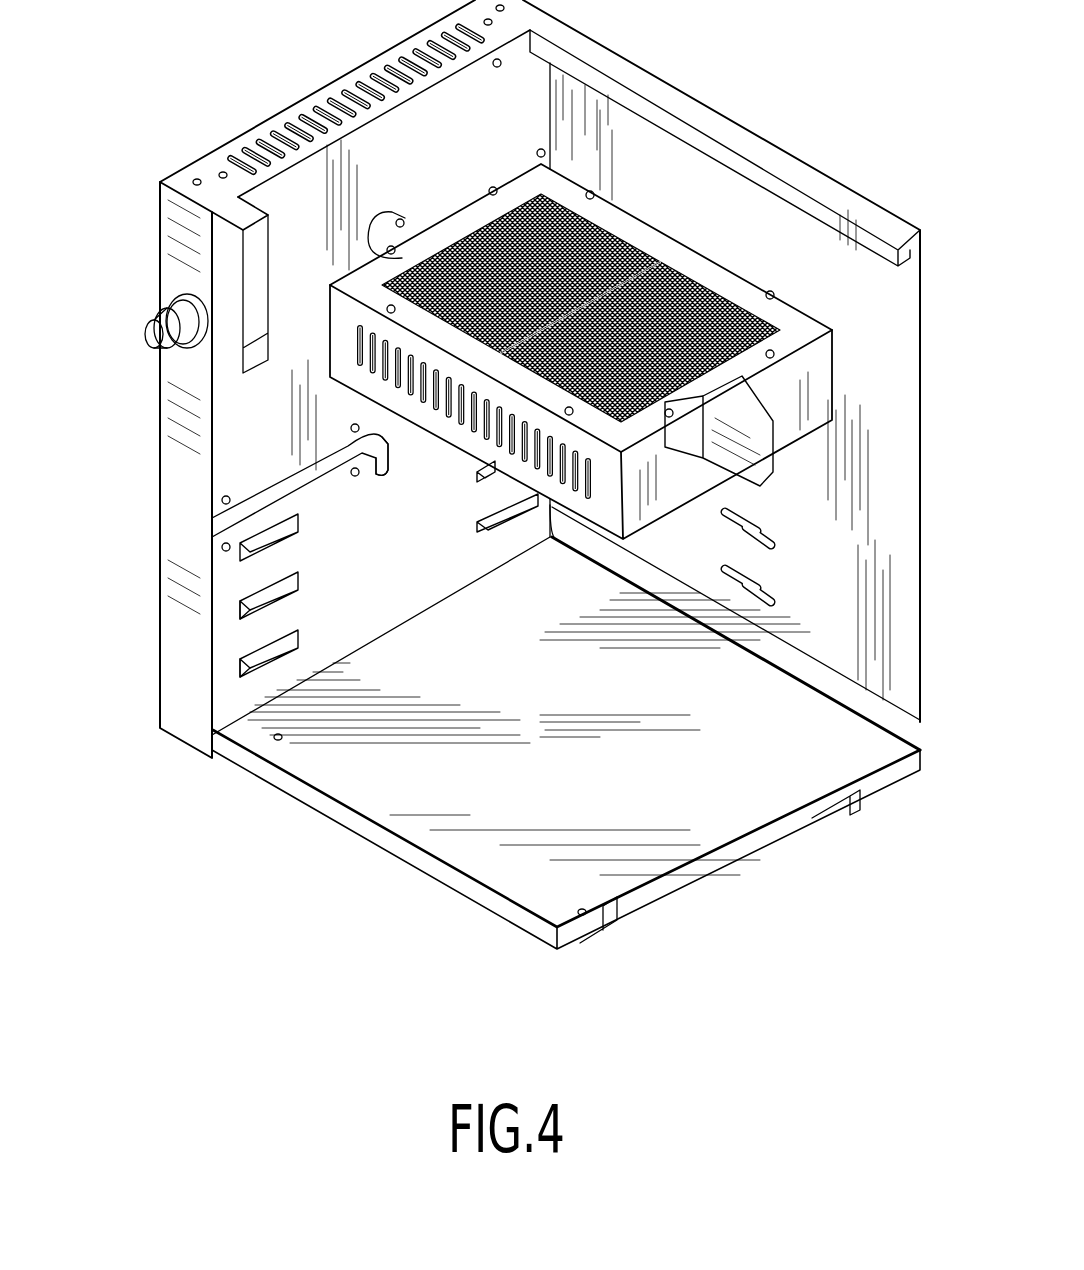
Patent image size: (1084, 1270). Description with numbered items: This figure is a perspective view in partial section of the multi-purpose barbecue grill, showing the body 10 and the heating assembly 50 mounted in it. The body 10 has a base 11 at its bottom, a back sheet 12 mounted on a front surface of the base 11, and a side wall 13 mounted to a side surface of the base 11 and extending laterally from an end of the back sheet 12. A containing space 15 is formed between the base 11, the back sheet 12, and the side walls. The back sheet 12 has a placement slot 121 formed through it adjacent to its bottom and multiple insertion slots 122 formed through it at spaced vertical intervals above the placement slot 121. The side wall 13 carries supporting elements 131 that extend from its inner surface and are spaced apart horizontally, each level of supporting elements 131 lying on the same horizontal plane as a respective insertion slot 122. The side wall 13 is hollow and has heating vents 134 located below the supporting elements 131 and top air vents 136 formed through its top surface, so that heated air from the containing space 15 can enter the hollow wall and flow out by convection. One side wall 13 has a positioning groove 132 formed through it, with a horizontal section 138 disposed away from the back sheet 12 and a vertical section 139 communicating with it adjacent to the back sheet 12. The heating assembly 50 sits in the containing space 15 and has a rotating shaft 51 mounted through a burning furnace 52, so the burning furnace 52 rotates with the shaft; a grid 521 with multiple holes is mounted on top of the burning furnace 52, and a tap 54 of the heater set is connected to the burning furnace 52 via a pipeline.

The body 10 is at (497, 501).
The base 11 is at (373, 853).
The back sheet 12 is at (790, 134).
The side wall 13 is at (159, 229).
The containing space 15 is at (305, 452).
The heating assembly 50 is at (611, 330).
The rotating shaft 51 is at (780, 425).
The burning furnace 52 is at (599, 285).
The tap 54 is at (153, 313).
The placement slot 121 is at (842, 690).
The insertion slots 122 is at (752, 536).
The supporting elements 131 is at (475, 470).
The positioning groove 132 is at (178, 515).
The heating vents 134 is at (242, 615).
The top air vents 136 is at (393, 63).
The horizontal section 138 is at (287, 493).
The vertical section 139 is at (382, 476).
The grid 521 is at (723, 287).